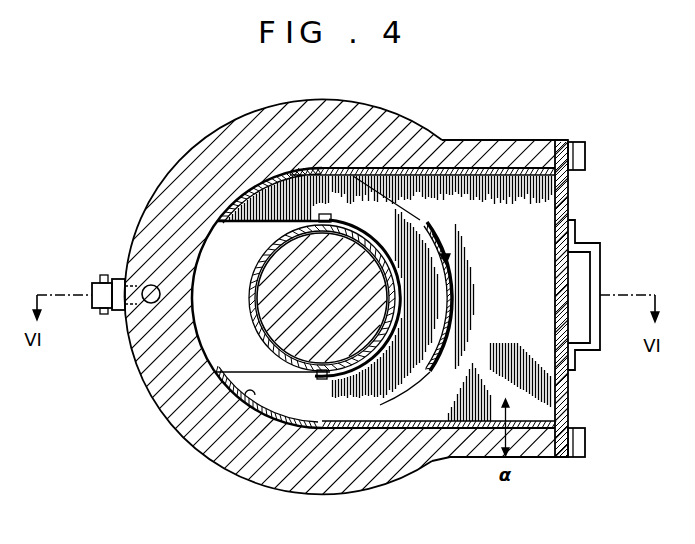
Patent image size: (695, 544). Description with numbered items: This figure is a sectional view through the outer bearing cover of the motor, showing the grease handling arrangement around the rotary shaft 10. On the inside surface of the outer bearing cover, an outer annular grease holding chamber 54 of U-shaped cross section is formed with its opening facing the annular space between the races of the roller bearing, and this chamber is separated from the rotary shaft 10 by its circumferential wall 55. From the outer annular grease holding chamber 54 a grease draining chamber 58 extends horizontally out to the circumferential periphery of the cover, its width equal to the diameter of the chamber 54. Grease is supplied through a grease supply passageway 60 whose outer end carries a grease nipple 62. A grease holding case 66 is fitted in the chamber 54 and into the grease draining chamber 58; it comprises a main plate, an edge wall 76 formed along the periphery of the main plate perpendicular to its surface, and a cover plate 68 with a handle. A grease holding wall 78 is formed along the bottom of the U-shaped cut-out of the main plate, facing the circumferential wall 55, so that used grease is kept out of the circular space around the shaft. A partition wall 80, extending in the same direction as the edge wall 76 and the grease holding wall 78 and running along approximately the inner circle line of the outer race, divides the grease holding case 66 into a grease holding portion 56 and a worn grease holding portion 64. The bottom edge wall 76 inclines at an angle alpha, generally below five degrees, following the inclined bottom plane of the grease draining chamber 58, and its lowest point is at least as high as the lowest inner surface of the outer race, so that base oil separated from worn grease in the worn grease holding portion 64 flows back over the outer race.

The rotary shaft 10 is at (343, 350).
The outer annular grease holding chamber 54 is at (146, 375).
The outer circumferential wall 55 is at (250, 265).
The grease holding portion 56 is at (313, 203).
The grease draining chamber 58 is at (450, 170).
The grease supply passageway 60 is at (142, 291).
The grease nipple 62 is at (95, 311).
The worn grease holding portion 64 is at (470, 280).
The grease holding case 66 is at (570, 397).
The cover plate 68 is at (572, 188).
The edge wall 76 is at (204, 449).
The grease holding wall 78 is at (372, 232).
The partition wall 80 is at (452, 330).